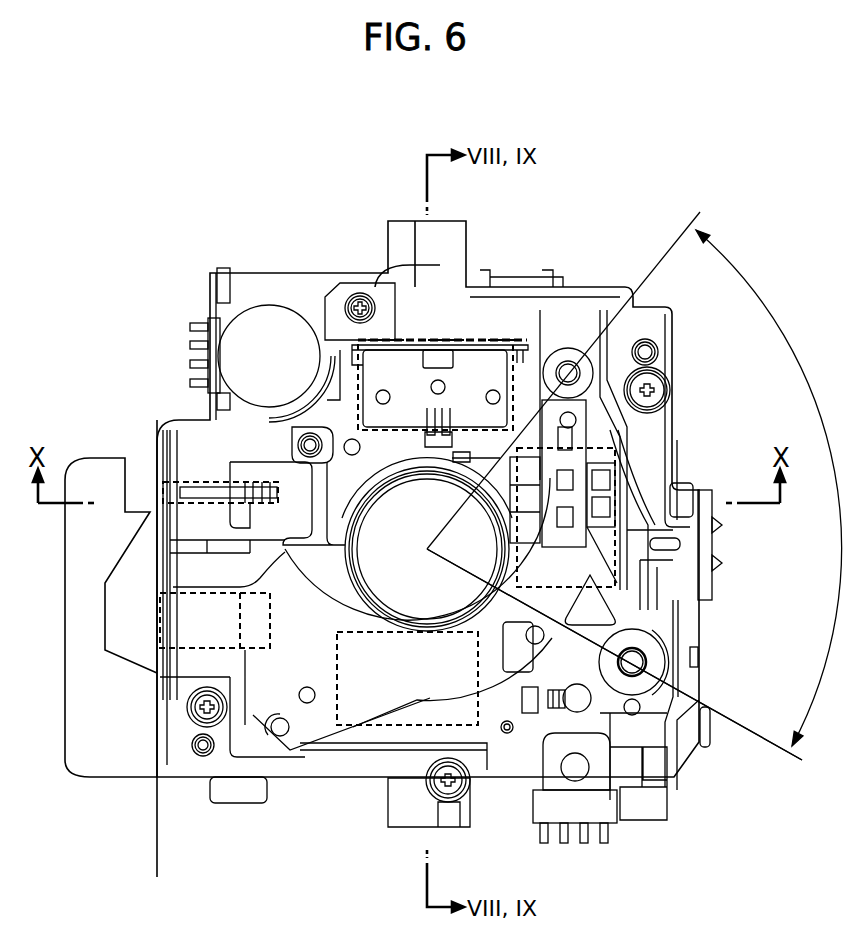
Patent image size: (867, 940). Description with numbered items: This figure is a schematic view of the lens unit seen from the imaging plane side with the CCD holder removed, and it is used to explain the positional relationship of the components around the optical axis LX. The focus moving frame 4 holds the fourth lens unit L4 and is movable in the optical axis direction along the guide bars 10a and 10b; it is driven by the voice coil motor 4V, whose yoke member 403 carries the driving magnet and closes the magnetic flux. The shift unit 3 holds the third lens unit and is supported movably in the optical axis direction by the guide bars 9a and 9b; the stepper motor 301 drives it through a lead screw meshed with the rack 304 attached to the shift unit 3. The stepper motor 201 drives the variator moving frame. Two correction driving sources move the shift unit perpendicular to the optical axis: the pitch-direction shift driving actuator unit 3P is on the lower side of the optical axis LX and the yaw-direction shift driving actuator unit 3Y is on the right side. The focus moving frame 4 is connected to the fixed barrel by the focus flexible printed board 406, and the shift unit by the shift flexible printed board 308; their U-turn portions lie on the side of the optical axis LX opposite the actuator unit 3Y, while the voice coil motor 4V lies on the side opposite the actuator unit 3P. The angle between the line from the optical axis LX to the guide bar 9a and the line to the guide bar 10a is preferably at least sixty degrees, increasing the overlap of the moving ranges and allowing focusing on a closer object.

The focus moving frame 4 is at (312, 601).
The voice coil motor 4V is at (382, 327).
The stepper motor 201 is at (257, 352).
The fourth guide bar 9b is at (298, 440).
The focus flexible printed board 406 is at (197, 497).
The shift flexible printed board 308 is at (202, 617).
The yoke member 403 is at (493, 370).
The fifth guide bar 10a is at (568, 362).
The fourth lens unit L4 is at (470, 528).
The optical axis LX is at (427, 551).
The yaw-direction shift driving actuator unit 3Y is at (633, 548).
The third guide bar 9a is at (668, 640).
The shift unit 3 is at (657, 667).
The rack 304 is at (584, 704).
The stepper motor 301 is at (592, 778).
The sixth guide bar 10b is at (280, 736).
The pitch-direction shift driving actuator unit 3P is at (397, 740).